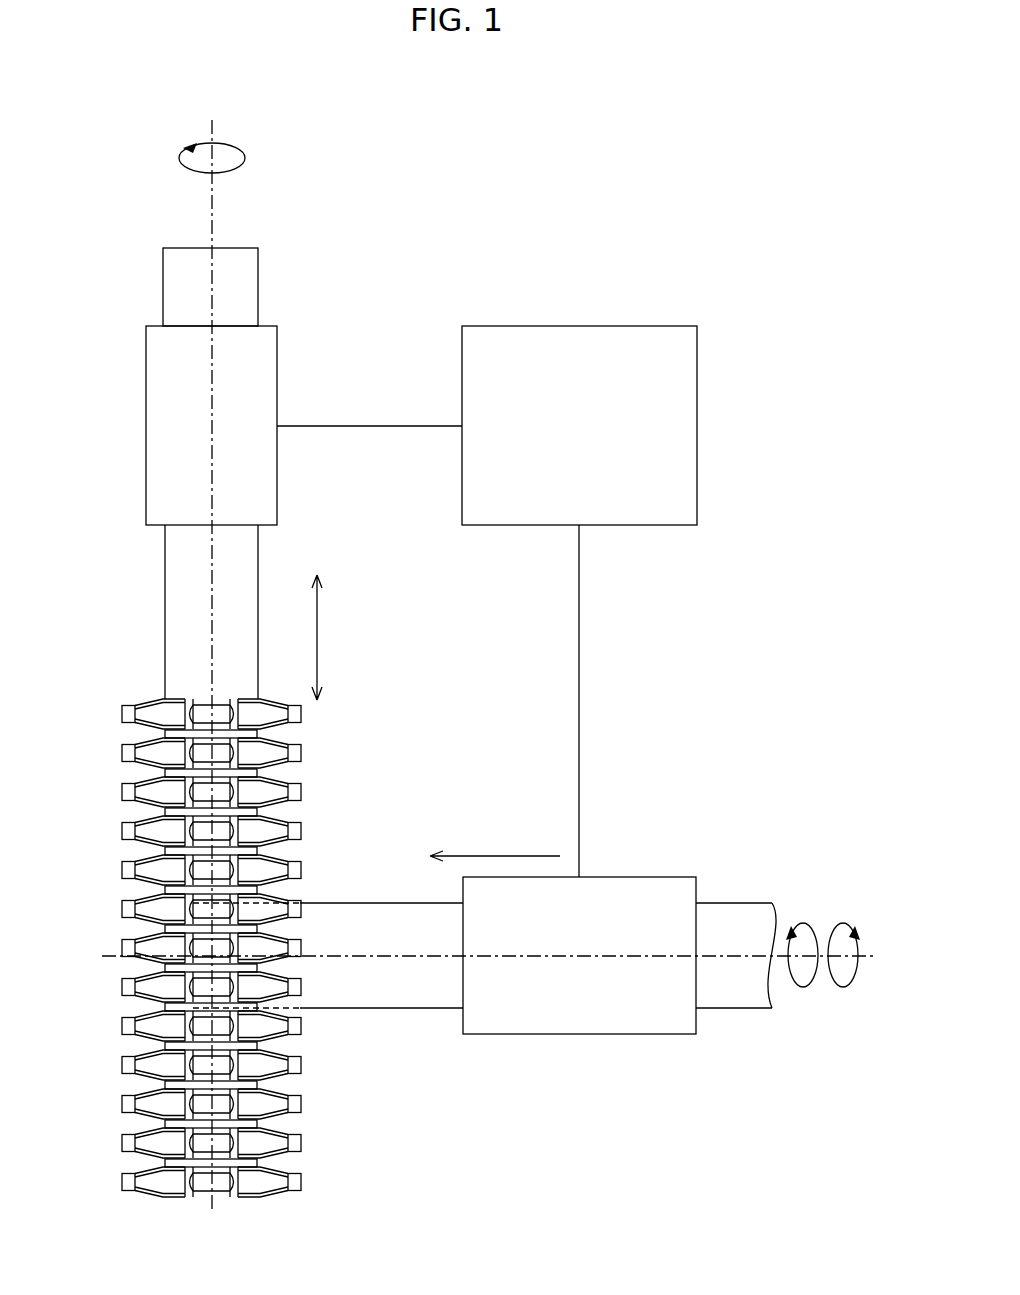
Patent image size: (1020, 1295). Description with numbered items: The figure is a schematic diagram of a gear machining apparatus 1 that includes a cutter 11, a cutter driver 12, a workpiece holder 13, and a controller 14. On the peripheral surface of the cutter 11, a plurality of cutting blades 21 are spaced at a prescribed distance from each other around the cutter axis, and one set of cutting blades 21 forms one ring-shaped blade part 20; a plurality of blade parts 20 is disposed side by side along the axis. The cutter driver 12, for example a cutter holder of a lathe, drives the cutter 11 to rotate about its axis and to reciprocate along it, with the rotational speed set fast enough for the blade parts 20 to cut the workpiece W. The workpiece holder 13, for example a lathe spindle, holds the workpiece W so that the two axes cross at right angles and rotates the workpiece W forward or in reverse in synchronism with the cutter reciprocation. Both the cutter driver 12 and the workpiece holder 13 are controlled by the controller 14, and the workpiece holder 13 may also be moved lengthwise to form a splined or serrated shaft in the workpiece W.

The gear machining apparatus 1 is at (452, 155).
The cutter 11 is at (104, 641).
The cutter driver 12 is at (146, 362).
The workpiece holder 13 is at (522, 1035).
The controller 14 is at (668, 326).
The blade part 20 is at (106, 870).
The cutting blade 21 is at (135, 862).
The workpiece W is at (362, 1010).